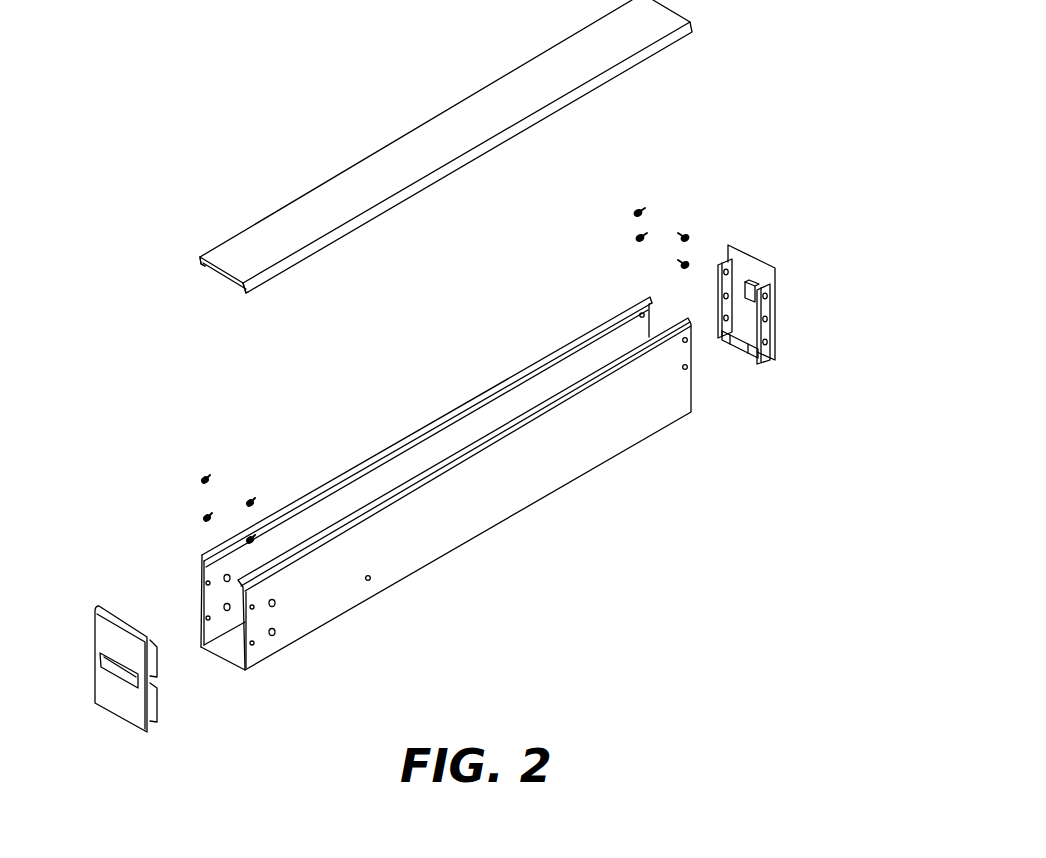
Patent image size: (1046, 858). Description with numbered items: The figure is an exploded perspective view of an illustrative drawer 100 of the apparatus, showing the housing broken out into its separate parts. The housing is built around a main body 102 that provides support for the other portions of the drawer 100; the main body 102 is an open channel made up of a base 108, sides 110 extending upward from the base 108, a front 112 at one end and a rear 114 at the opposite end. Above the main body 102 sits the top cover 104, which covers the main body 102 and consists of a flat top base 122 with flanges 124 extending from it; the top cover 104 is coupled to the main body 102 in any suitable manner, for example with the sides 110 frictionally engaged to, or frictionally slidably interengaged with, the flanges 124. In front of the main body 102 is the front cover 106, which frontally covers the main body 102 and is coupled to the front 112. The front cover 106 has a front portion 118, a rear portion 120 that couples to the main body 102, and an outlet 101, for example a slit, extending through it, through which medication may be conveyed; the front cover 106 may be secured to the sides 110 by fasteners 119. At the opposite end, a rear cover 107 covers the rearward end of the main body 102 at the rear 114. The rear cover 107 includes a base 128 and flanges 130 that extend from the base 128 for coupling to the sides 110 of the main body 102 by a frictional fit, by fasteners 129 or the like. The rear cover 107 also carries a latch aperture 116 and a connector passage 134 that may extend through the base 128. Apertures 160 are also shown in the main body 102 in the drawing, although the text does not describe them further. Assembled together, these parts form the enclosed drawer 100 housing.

The drawer 100 is at (171, 122).
The outlet 101 is at (100, 662).
The main body 102 is at (442, 530).
The top cover 104 is at (439, 146).
The front cover 106 is at (100, 651).
The rear cover 107 is at (744, 278).
The base 108 is at (232, 648).
The sides 110 is at (594, 328).
The front 112 is at (212, 678).
The rear 114 is at (718, 395).
The latch aperture 116 is at (747, 295).
The front portion 118 is at (117, 698).
The fasteners 119 is at (211, 515).
The rear portion 120 is at (128, 615).
The top base 122 is at (366, 176).
The flanges 124 is at (201, 261).
The base 128 is at (750, 258).
The fasteners 129 is at (683, 263).
The flanges 130 is at (716, 268).
The connector passage 134 is at (732, 347).
The fastener apertures 160 is at (223, 607).